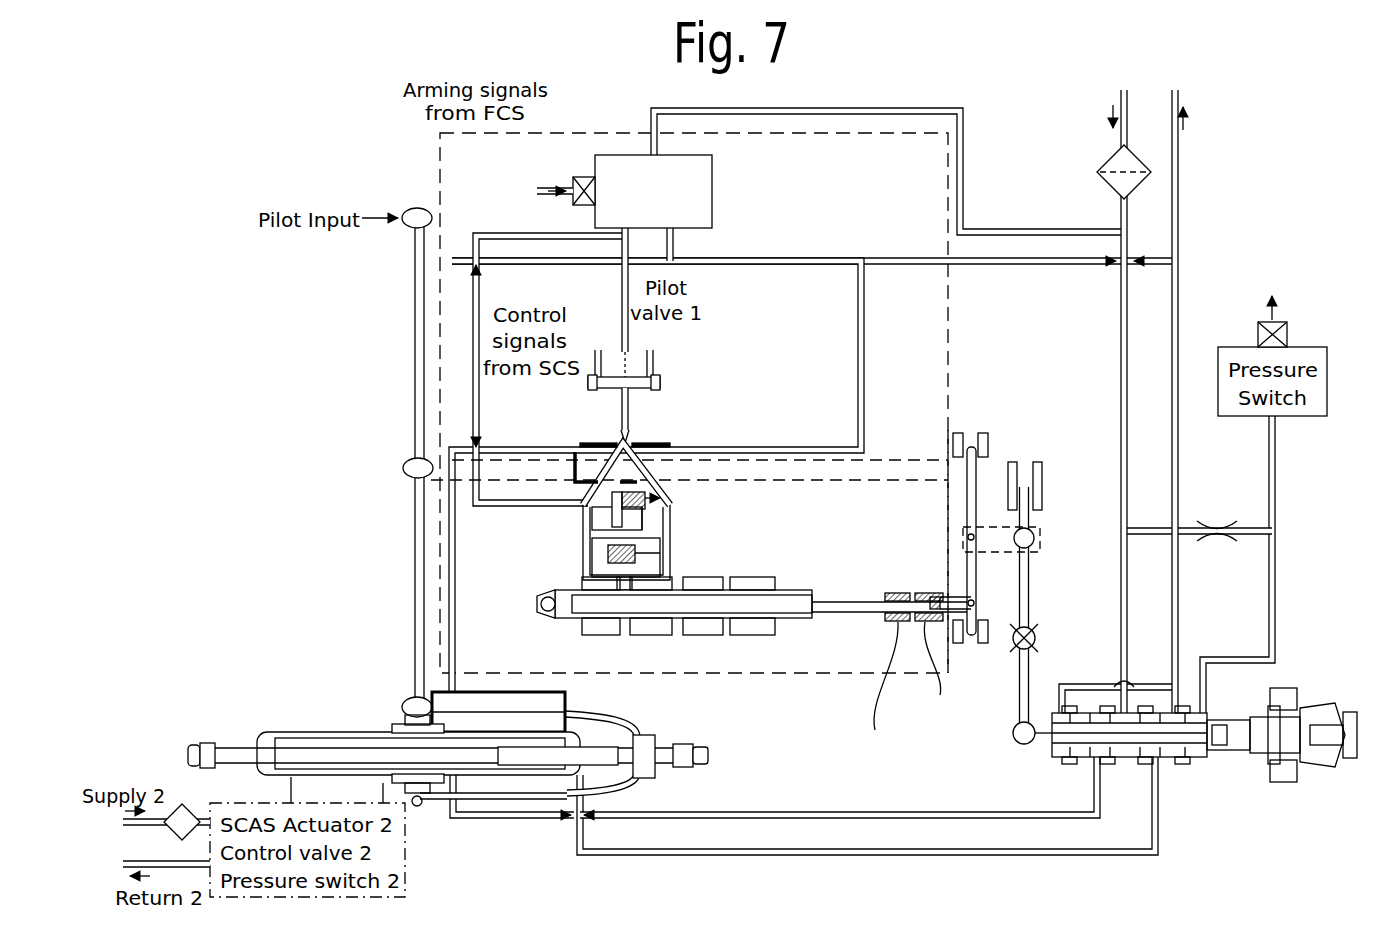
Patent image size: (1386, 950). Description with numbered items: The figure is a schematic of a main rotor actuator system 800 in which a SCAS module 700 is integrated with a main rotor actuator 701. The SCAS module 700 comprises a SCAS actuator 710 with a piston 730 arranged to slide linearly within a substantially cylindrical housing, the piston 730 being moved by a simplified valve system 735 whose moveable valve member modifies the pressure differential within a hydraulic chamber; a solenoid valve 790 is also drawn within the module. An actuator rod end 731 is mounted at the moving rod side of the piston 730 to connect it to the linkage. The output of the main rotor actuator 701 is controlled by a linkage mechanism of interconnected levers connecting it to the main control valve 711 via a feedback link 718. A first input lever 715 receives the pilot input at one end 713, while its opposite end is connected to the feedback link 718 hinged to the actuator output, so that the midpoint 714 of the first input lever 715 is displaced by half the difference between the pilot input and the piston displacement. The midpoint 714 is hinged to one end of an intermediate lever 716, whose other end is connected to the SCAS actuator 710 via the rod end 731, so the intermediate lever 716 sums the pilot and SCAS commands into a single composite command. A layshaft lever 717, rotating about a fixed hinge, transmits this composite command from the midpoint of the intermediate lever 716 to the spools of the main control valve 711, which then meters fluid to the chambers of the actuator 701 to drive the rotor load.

The SCAS module 700 is at (948, 362).
The main rotor actuator 701 is at (505, 840).
The SCAS actuator 710 is at (684, 539).
The main control valve 711 is at (1234, 856).
The pilot input end 713 is at (410, 206).
The midpoint of the first input lever 714 is at (410, 462).
The first input lever 715 is at (413, 360).
The intermediate lever 716 is at (985, 424).
The layshaft lever 717 is at (1031, 600).
The feedback link 718 is at (565, 712).
The piston 730 is at (833, 620).
The actuator rod end 731 is at (966, 598).
The valve system 735 is at (679, 387).
The solenoid valve 790 is at (712, 194).
The actuator system 800 is at (1203, 209).